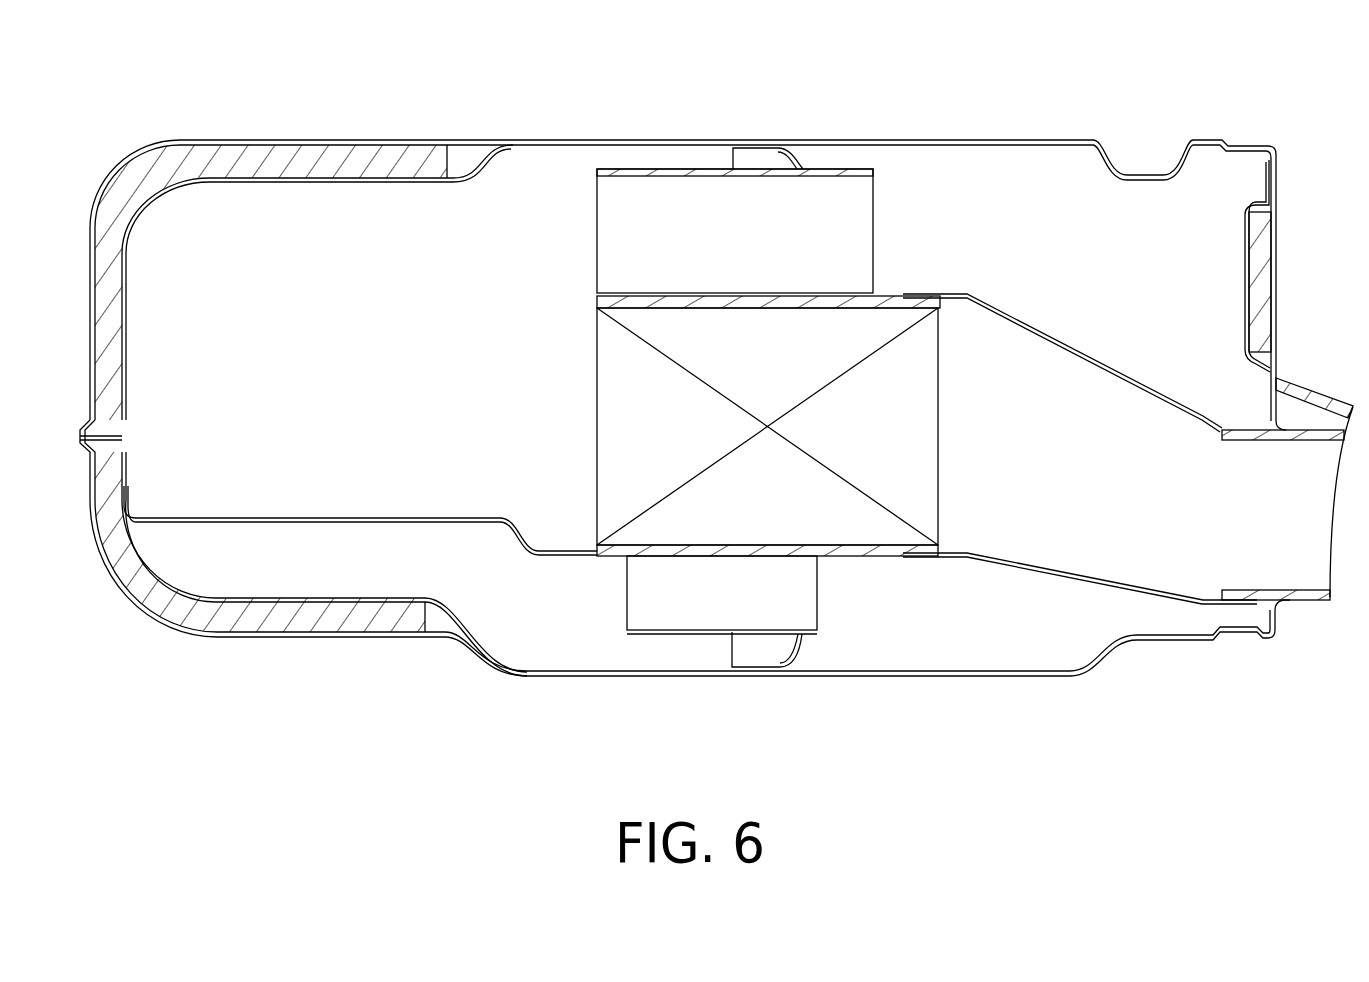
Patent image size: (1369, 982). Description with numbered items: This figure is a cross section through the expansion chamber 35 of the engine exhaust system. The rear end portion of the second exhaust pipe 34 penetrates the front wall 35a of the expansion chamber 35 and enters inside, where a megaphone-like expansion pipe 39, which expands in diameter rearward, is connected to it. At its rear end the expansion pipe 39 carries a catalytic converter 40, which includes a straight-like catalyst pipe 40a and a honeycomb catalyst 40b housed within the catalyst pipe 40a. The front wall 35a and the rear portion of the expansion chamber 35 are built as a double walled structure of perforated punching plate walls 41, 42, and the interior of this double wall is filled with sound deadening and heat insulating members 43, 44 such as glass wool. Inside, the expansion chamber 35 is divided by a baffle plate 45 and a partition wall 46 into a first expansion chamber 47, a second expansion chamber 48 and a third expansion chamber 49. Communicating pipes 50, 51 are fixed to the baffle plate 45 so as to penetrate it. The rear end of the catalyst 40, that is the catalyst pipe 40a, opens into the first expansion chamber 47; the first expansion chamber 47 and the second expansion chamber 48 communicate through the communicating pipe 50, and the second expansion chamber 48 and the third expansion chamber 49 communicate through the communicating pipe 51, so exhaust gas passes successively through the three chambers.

The second exhaust pipe 34 is at (1327, 428).
The expansion chamber 35 is at (729, 105).
The front wall 35a is at (1277, 265).
The expansion pipe 39 is at (1103, 370).
The catalytic converter 40 is at (509, 312).
The catalyst pipe 40a is at (618, 317).
The honeycomb catalyst 40b is at (618, 368).
The perforated punching plate wall 41 is at (1245, 243).
The perforated punching plate wall 42 is at (126, 290).
The sound deadening and heat insulating member 43 is at (1262, 288).
The sound deadening and heat insulating member 44 is at (310, 180).
The baffle plate 45 is at (800, 167).
The partition wall 46 is at (382, 518).
The first expansion chamber 47 is at (349, 345).
The second expansion chamber 48 is at (1086, 233).
The third expansion chamber 49 is at (496, 585).
The communicating pipe 50 is at (597, 224).
The communicating pipe 51 is at (627, 594).